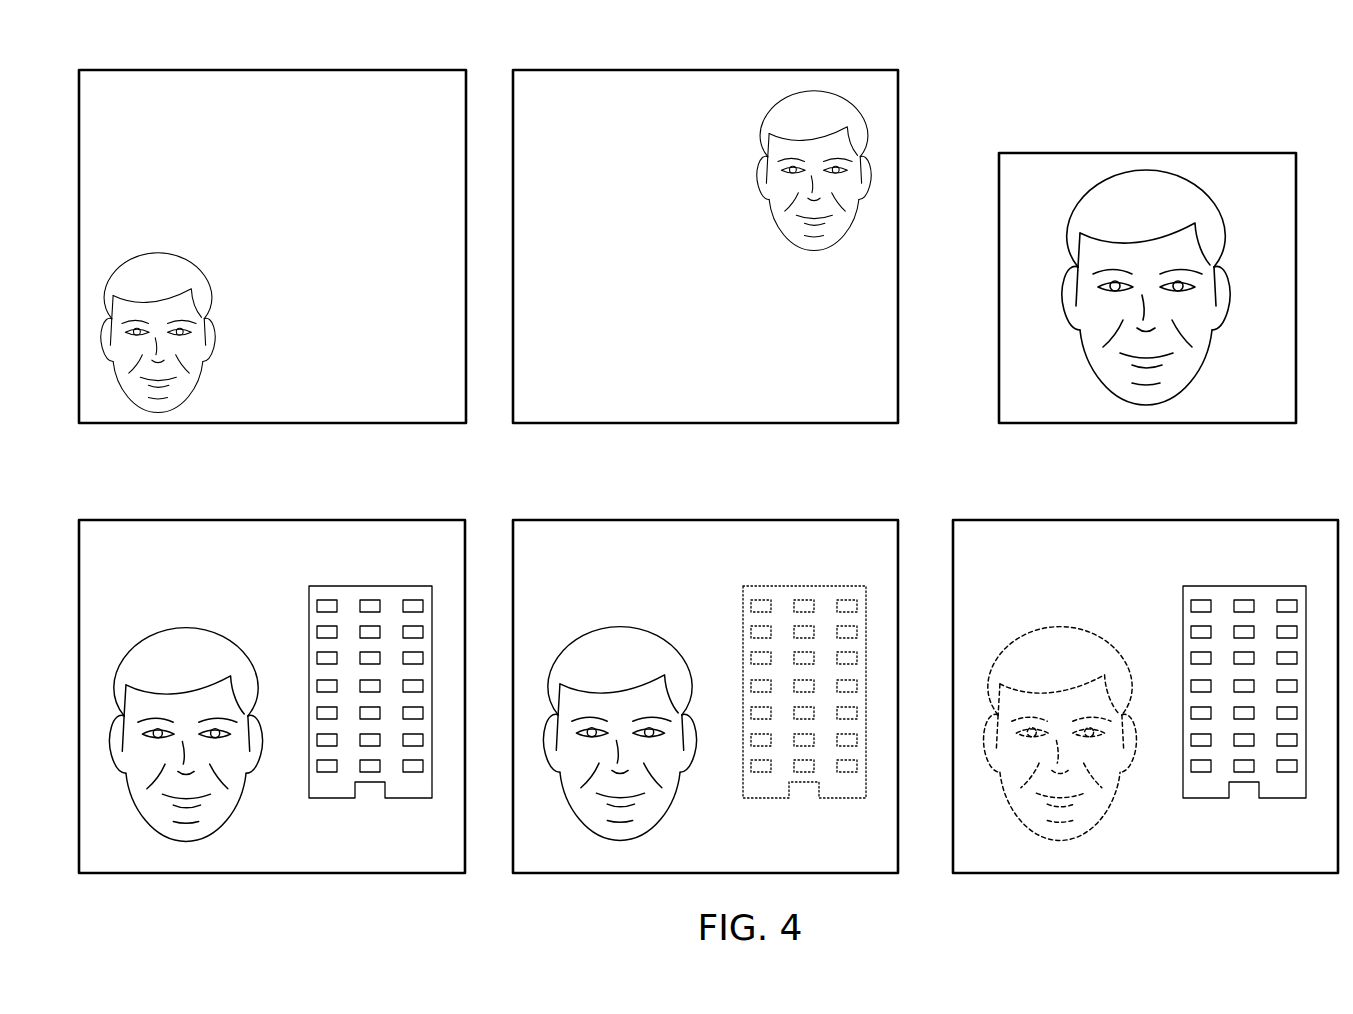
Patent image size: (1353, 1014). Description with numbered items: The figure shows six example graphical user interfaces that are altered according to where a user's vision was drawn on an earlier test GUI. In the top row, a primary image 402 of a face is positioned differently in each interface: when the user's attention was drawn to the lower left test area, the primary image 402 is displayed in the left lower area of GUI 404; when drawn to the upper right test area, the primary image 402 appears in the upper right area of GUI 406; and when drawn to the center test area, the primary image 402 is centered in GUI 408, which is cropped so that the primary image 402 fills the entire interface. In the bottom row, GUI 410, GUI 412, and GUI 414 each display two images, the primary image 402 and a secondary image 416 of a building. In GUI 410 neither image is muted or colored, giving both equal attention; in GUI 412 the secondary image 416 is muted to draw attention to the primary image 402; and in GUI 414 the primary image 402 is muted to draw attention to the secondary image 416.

The primary image 402 is at (158, 253).
The GUI 404 is at (272, 70).
The GUI 406 is at (704, 70).
The GUI 408 is at (1146, 153).
The GUI 410 is at (272, 520).
The GUI 412 is at (704, 520).
The GUI 414 is at (1145, 520).
The secondary image 416 is at (345, 798).